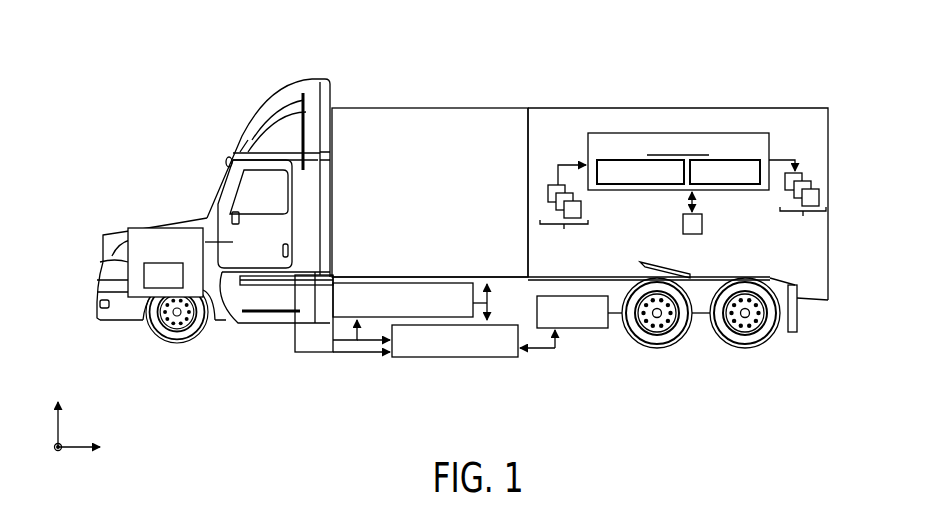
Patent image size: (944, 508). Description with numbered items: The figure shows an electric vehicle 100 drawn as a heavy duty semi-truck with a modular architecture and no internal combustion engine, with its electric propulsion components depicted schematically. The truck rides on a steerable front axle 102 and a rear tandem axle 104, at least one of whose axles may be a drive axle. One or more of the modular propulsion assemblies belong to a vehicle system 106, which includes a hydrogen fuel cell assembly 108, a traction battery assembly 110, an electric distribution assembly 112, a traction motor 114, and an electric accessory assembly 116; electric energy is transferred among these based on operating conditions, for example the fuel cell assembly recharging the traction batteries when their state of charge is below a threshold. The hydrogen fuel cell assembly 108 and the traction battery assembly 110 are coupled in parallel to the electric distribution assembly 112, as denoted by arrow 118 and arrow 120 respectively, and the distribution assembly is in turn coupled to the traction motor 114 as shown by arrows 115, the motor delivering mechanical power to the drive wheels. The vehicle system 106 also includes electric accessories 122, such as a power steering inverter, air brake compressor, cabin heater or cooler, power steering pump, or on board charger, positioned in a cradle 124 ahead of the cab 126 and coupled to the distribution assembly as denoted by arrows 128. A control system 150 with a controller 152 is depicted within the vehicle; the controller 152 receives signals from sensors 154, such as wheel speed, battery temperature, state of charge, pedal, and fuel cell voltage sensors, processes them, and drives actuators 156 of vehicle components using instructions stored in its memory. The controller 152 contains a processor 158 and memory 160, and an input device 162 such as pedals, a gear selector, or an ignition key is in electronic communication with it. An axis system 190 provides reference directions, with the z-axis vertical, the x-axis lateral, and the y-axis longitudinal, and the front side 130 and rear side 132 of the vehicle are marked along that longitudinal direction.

The electric vehicle 100 is at (103, 100).
The front axle 102 is at (177, 372).
The rear tandem axle 104 is at (690, 368).
The vehicle system 106 is at (408, 58).
The hydrogen fuel cell assembly 108 is at (413, 163).
The traction battery assembly 110 is at (388, 308).
The electric distribution assembly 112 is at (440, 350).
The traction motor 114 is at (558, 321).
The arrows 115 is at (552, 352).
The electric accessory assembly 116 is at (149, 250).
The arrow 118 is at (342, 313).
The arrow 120 is at (490, 303).
The electric accessories 122 is at (97, 291).
The cradle 124 is at (98, 252).
The cab 126 is at (194, 194).
The arrows 128 is at (362, 357).
The front side 130 is at (80, 258).
The rear side 132 is at (838, 238).
The control system 150 is at (575, 148).
The controller 152 is at (627, 133).
The sensors 154 is at (564, 207).
The actuators 156 is at (797, 198).
The processor 158 is at (626, 184).
The memory 160 is at (711, 184).
The input device 162 is at (681, 224).
The axis system 190 is at (80, 410).